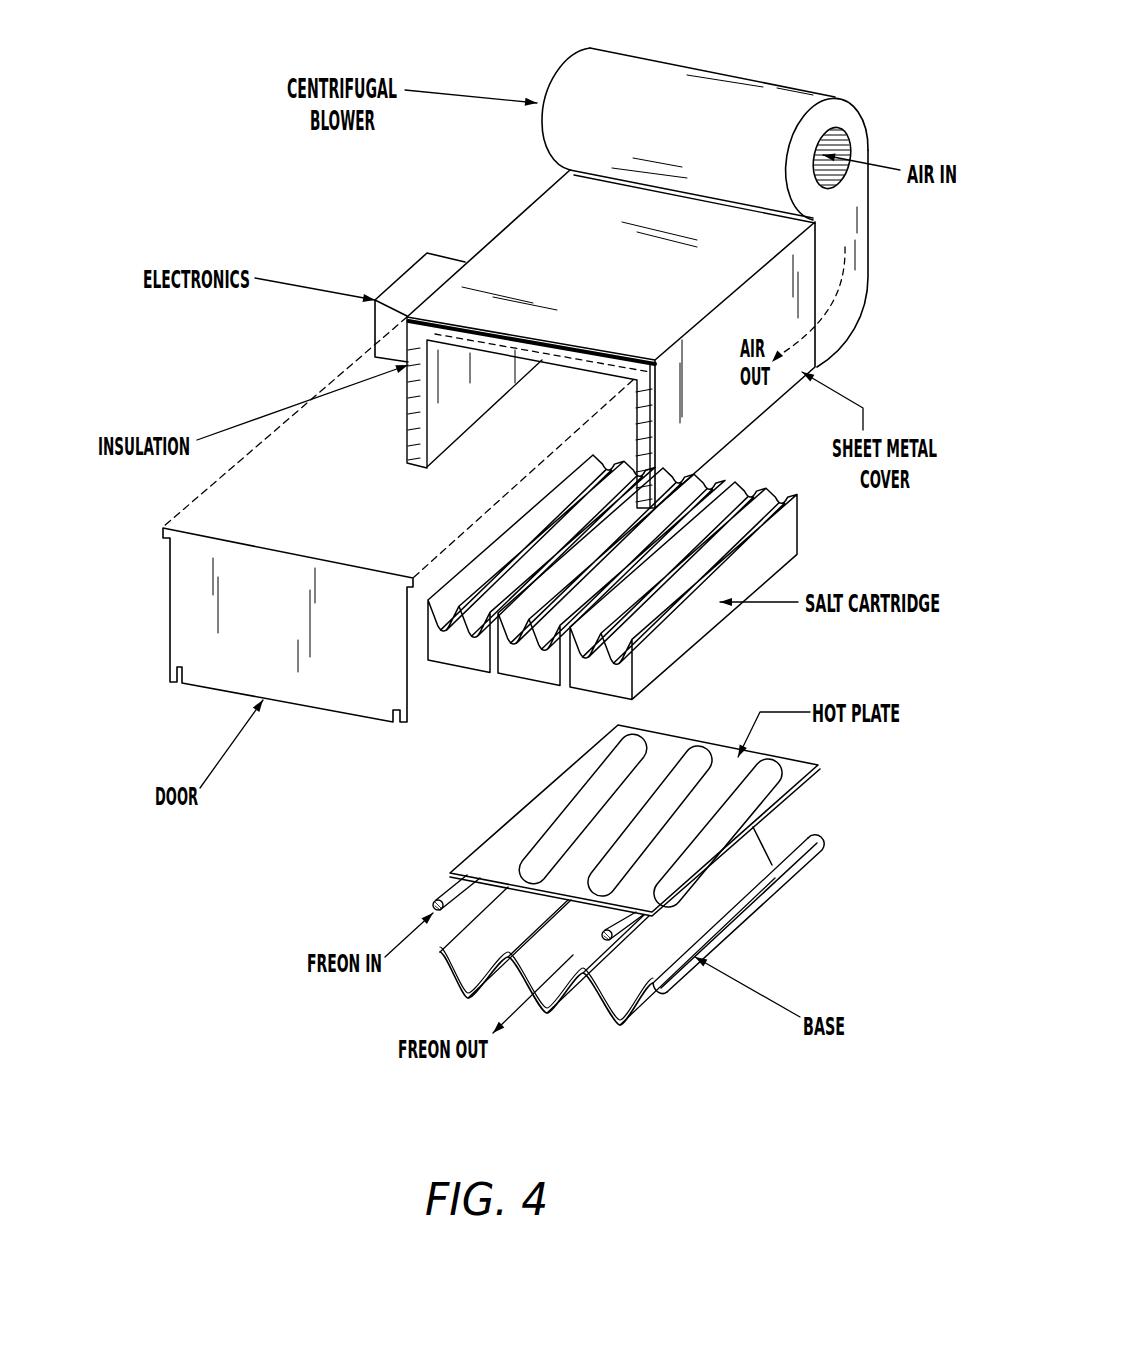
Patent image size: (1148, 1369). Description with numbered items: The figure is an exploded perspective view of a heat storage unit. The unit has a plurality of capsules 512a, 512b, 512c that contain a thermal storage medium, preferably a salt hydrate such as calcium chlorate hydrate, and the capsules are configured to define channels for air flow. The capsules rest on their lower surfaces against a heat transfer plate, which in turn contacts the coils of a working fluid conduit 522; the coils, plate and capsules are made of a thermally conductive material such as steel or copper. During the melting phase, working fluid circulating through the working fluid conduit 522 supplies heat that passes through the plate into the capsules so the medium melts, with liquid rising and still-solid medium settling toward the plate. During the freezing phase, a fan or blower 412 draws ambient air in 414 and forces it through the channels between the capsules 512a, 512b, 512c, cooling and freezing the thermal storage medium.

The fan or blower 412 is at (747, 97).
The ambient air in 414 is at (885, 169).
The capsule 512a is at (443, 662).
The capsule 512b is at (527, 680).
The capsule 512c is at (587, 692).
The working fluid conduit 522 is at (443, 900).